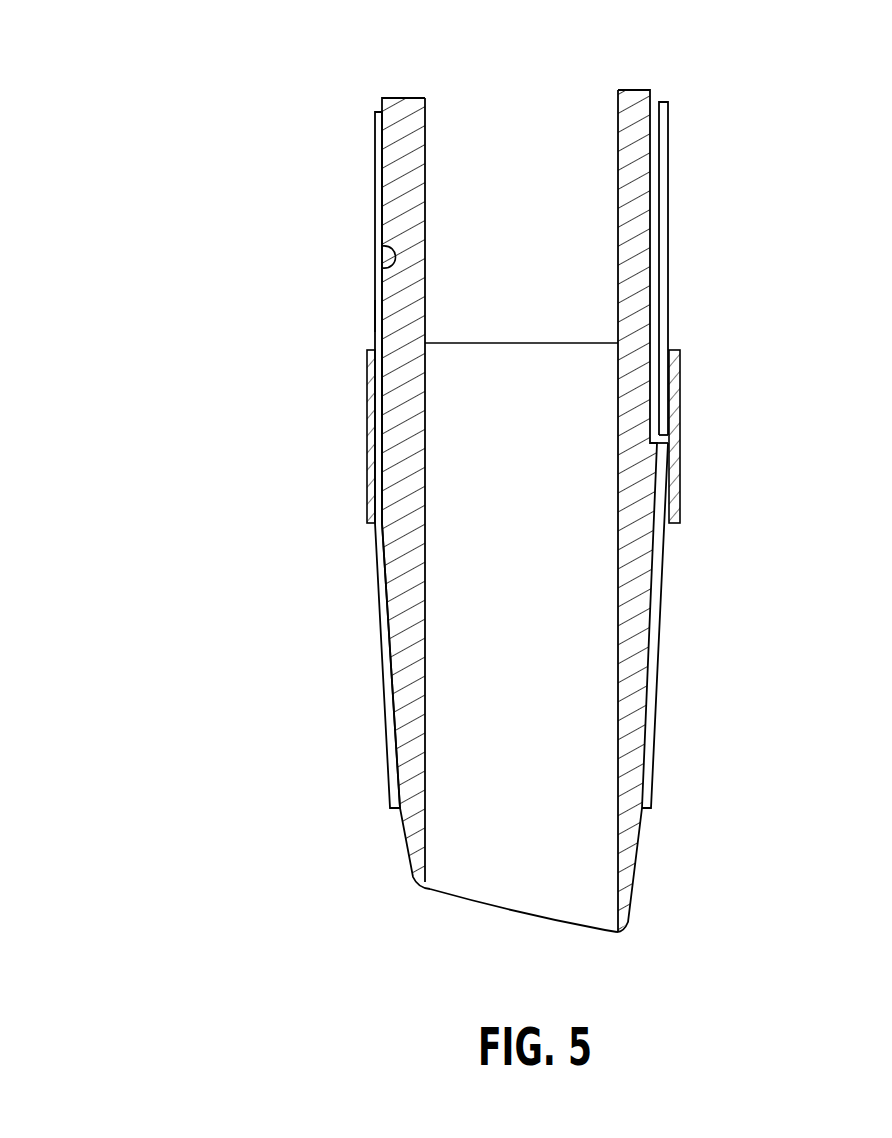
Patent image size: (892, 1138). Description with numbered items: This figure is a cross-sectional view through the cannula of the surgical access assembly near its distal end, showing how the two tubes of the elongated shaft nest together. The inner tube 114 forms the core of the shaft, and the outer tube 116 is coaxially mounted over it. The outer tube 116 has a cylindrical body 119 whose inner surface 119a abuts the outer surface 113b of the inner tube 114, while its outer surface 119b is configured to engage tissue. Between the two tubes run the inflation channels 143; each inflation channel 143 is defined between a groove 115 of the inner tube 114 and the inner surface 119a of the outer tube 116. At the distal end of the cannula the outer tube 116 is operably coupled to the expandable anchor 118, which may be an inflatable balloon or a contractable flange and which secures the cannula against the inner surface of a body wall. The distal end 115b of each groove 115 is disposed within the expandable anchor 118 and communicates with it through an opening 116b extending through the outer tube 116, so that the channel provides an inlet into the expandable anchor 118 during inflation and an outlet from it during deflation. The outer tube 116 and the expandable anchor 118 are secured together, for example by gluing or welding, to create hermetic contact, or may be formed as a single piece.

The outer surface 113b is at (380, 316).
The inner tube 114 is at (402, 120).
The groove 115 is at (653, 175).
The distal end 115b is at (667, 458).
The outer tube 116 is at (354, 143).
The opening 116b is at (666, 440).
The expandable anchor 118 is at (681, 392).
The cylindrical body 119 is at (377, 195).
The inner surface 119a is at (390, 260).
The outer surface 119b is at (378, 562).
The inflation channel 143 is at (655, 110).